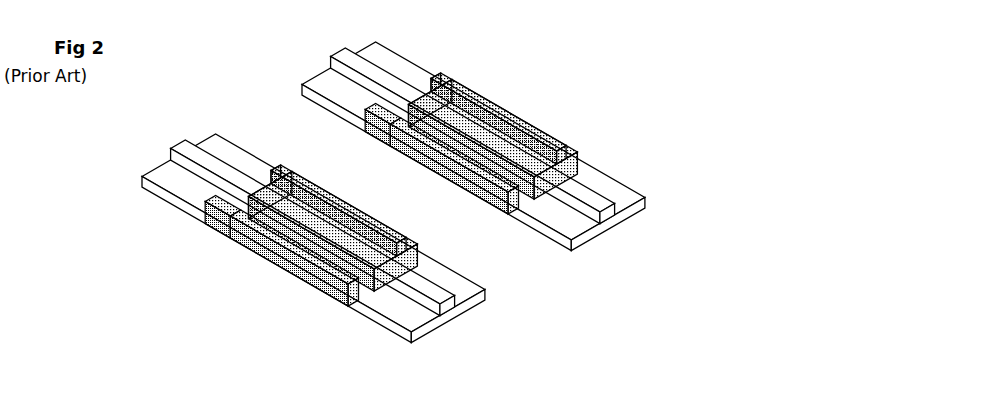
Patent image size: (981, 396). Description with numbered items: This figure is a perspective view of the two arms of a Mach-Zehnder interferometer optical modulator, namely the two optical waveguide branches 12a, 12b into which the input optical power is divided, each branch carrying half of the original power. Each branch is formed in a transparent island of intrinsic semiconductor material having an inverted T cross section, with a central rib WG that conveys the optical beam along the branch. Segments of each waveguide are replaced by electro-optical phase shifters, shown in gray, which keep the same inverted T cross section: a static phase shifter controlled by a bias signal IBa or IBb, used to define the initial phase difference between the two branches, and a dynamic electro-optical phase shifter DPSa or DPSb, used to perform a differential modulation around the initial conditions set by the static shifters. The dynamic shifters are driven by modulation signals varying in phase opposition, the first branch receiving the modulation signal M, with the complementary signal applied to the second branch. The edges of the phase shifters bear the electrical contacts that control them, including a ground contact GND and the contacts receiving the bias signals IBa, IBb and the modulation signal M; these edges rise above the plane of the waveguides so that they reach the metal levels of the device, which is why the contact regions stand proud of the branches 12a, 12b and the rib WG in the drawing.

The waveguide branch 12a is at (600, 182).
The waveguide branch 12b is at (440, 274).
The central rib WG is at (393, 182).
The dynamic electro-optical phase shifter DPSa is at (493, 143).
The dynamic electro-optical phase shifter DPSb is at (333, 235).
The ground contact GND is at (418, 161).
The modulation signal M is at (452, 155).
The bias signal IBa is at (378, 113).
The bias signal IBb is at (218, 205).